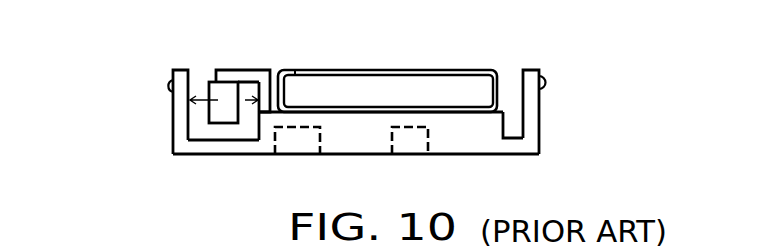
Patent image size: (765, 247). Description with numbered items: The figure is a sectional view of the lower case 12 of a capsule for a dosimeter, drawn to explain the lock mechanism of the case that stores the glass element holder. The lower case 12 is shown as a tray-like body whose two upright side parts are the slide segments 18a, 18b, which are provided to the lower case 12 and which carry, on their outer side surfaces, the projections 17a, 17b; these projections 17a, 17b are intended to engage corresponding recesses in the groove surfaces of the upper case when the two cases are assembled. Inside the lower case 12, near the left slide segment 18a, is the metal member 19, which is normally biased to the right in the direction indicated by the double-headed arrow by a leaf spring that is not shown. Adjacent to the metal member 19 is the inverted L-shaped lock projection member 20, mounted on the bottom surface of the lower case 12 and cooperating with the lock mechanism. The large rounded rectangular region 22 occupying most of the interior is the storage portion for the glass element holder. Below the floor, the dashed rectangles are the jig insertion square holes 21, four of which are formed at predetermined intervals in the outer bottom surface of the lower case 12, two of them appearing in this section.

The lower case 12 is at (524, 154).
The projection 17a is at (170, 87).
The projection 17b is at (544, 83).
The slide segment 18a is at (183, 117).
The slide segment 18b is at (531, 110).
The metal member 19 is at (214, 97).
The inverted L-shaped lock projection member 20 is at (253, 77).
The jig insertion square hole 21 is at (433, 168).
The storage portion 22 is at (410, 90).